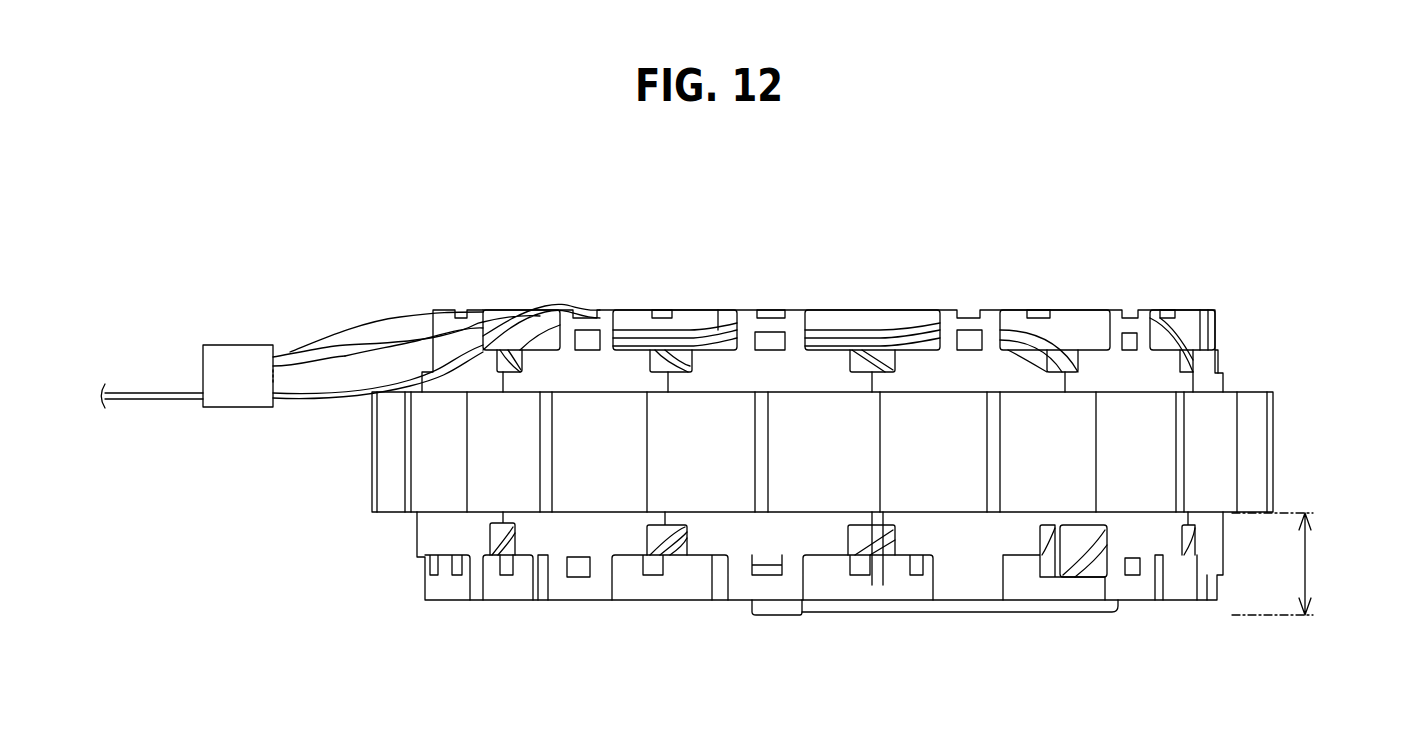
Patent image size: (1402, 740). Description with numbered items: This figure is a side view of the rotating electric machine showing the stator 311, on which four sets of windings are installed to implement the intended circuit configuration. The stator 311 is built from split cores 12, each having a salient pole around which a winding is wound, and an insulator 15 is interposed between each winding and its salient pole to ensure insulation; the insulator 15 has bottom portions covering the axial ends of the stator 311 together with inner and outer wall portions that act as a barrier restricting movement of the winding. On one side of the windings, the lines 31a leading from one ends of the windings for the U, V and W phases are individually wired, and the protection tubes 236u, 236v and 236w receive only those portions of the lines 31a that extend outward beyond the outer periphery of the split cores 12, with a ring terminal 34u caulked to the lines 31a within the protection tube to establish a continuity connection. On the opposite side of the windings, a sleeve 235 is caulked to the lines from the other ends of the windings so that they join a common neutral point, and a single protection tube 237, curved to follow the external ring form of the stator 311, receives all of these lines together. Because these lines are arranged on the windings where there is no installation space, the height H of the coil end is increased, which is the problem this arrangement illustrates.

The stator 311 is at (733, 464).
The split core 12 is at (580, 509).
The insulator 15 is at (607, 316).
The lines from one ends of the windings 31a is at (531, 311).
The protection tube 236u is at (425, 345).
The protection tube 236v is at (356, 338).
The protection tube 236w is at (292, 350).
The ring terminal 34u is at (225, 345).
The sleeve 235 is at (778, 615).
The protection tube 237 is at (915, 612).
The height of a coil end H is at (1281, 564).